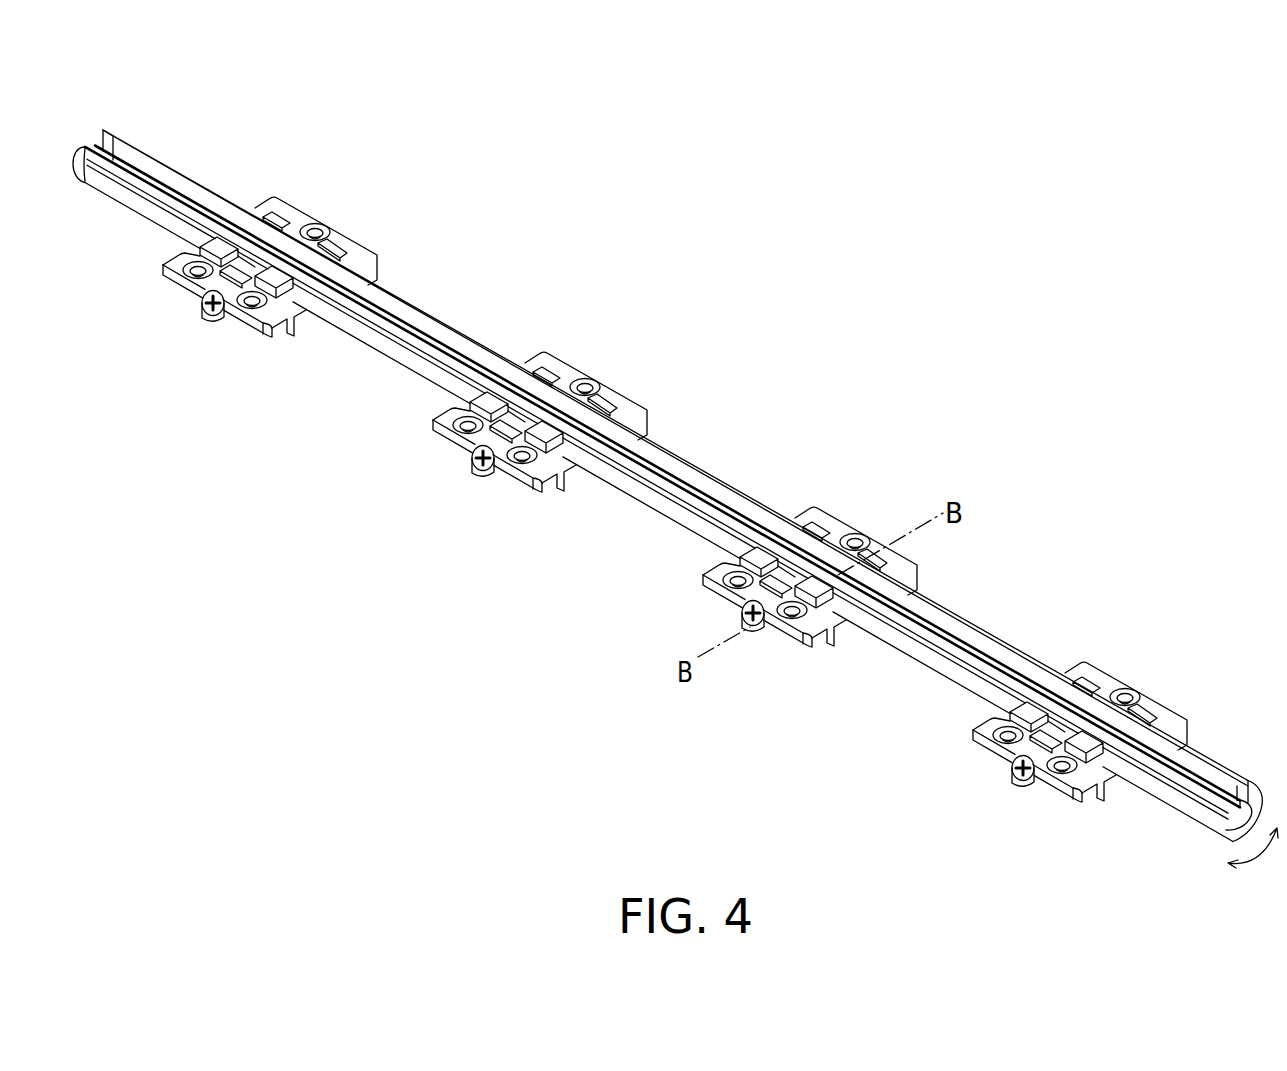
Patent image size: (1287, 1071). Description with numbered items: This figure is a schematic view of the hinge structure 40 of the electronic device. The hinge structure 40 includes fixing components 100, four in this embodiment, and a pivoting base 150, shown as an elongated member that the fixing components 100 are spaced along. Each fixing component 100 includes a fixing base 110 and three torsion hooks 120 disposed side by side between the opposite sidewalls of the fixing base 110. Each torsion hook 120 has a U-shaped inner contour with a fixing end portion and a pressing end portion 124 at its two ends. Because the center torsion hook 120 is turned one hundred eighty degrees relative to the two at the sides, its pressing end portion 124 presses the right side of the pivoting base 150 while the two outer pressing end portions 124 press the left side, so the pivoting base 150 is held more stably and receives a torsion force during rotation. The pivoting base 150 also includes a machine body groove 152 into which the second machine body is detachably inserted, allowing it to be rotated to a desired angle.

The hinge structure 40 is at (1205, 905).
The fixing component 100 is at (667, 486).
The fixing base 110 is at (726, 564).
The torsion hook 120 is at (726, 564).
The pressing end portion 124 is at (628, 563).
The pivoting base 150 is at (667, 486).
The machine body groove 152 is at (958, 621).